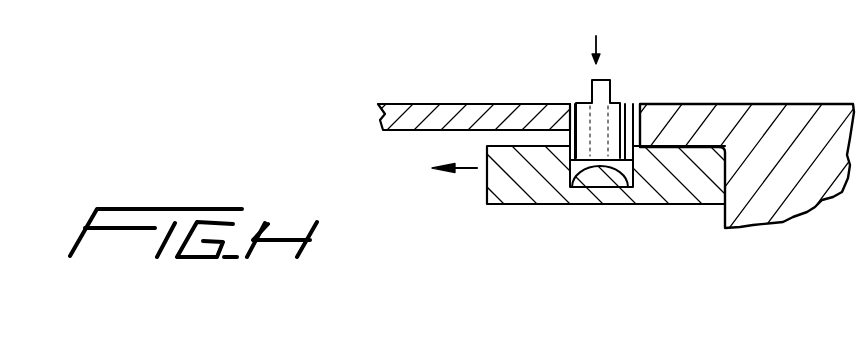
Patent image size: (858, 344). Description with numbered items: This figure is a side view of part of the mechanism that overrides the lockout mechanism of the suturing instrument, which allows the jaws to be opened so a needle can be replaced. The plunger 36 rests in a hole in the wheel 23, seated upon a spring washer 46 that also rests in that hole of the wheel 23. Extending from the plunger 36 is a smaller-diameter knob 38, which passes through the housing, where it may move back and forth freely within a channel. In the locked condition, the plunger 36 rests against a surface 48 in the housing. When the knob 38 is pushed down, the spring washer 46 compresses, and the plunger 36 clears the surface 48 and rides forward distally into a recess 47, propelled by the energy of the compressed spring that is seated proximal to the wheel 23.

The wheel 23 is at (733, 151).
The plunger 36 is at (634, 104).
The knob 38 is at (611, 96).
The spring washer 46 is at (600, 168).
The recess 47 is at (435, 163).
The surface 48 is at (562, 118).